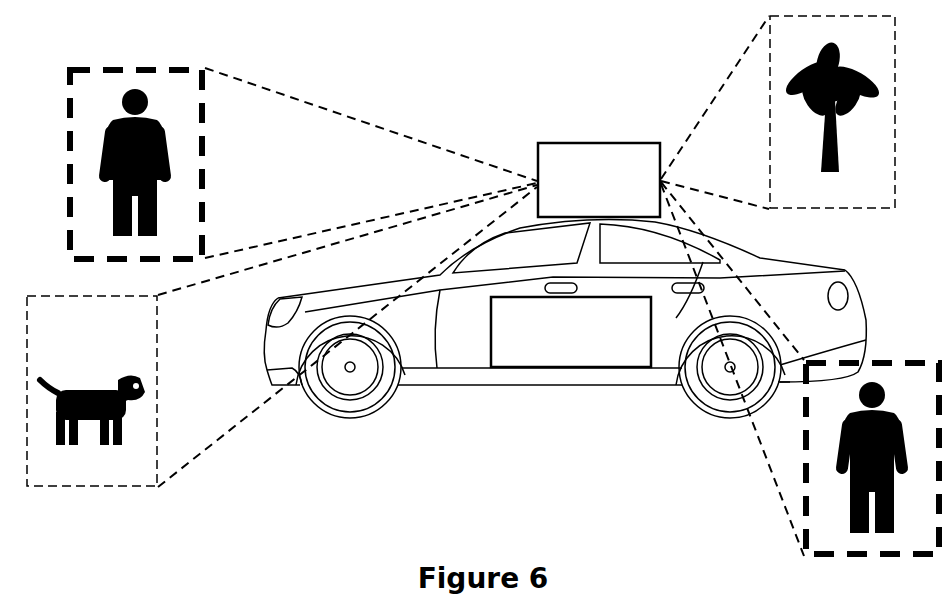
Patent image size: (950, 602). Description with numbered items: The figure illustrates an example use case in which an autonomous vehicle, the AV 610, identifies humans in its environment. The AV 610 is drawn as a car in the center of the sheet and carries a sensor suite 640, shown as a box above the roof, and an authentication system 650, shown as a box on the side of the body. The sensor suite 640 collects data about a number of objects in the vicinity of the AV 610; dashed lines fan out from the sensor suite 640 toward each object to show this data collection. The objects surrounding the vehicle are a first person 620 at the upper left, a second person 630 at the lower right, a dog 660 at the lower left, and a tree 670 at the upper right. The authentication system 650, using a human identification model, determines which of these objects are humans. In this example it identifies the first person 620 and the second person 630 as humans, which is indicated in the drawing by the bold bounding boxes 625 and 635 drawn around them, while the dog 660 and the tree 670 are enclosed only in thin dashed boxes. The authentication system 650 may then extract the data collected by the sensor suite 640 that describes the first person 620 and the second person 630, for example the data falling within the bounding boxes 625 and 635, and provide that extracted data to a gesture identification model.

The AV 610 is at (565, 319).
The first person 620 is at (97, 140).
The bounding box 625 is at (206, 184).
The second person 630 is at (835, 466).
The bounding box 635 is at (805, 500).
The sensor suite 640 is at (599, 180).
The authentication system 650 is at (571, 332).
The dog 660 is at (113, 378).
The tree 670 is at (807, 158).